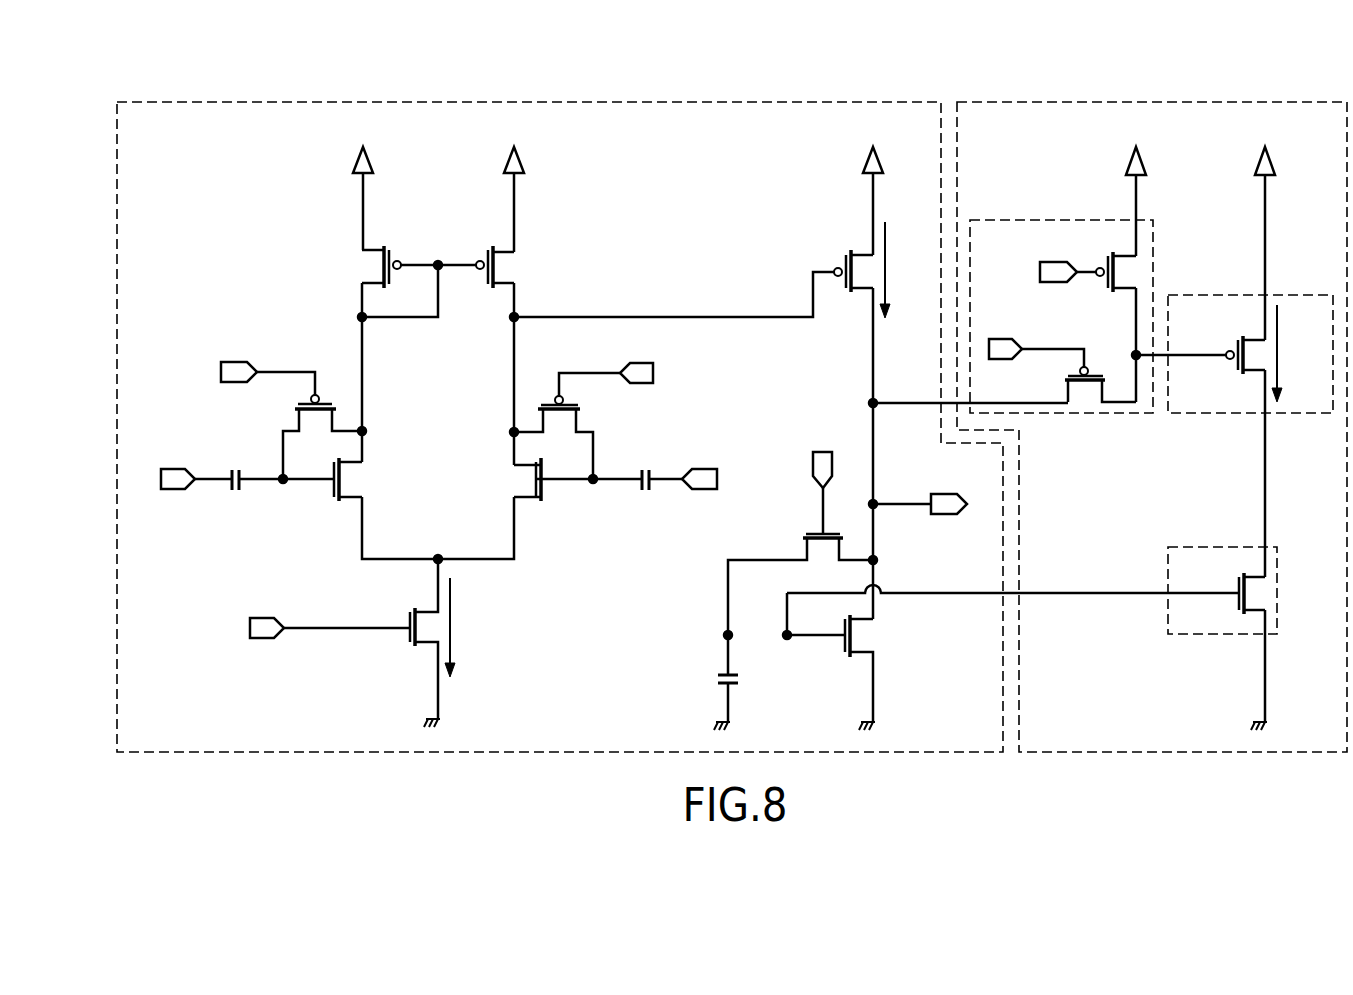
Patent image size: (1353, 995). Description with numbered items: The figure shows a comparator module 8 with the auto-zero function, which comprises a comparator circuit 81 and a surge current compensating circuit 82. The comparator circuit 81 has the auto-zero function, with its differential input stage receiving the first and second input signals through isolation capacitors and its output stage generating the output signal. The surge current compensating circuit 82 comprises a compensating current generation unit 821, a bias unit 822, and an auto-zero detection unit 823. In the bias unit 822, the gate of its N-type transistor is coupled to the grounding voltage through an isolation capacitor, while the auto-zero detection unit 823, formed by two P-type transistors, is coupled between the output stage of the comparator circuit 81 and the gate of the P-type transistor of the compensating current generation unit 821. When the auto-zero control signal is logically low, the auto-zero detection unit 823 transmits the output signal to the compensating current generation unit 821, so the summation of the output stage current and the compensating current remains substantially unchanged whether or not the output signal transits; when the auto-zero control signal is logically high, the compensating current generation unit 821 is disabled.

The comparator module 8 is at (147, 53).
The comparator circuit 81 is at (630, 100).
The surge current compensating circuit 82 is at (1203, 100).
The compensating current generation unit 821 is at (1217, 294).
The bias unit 822 is at (1190, 546).
The auto-zero detection unit 823 is at (1060, 219).